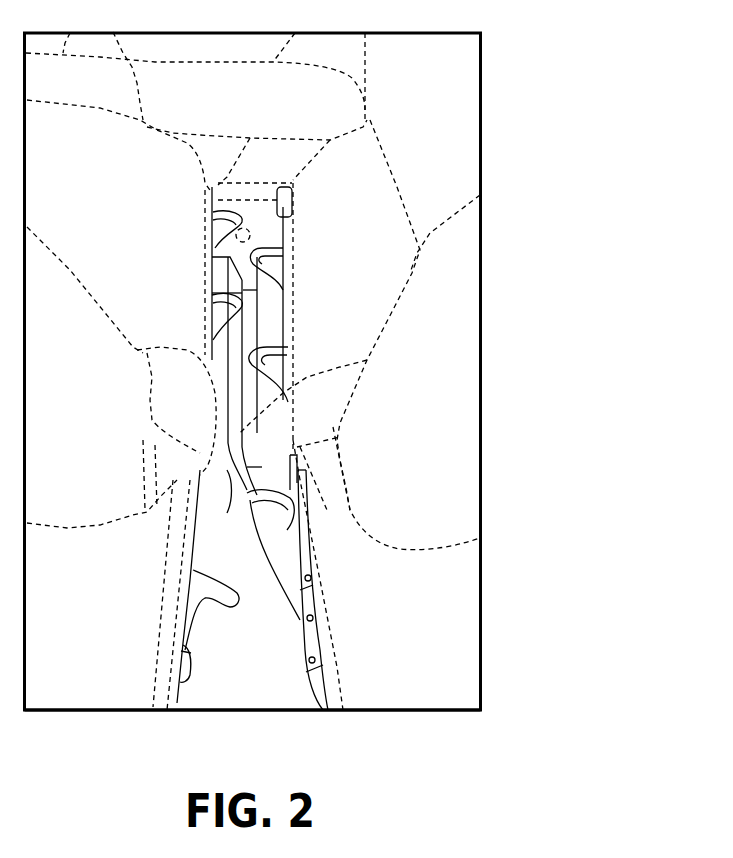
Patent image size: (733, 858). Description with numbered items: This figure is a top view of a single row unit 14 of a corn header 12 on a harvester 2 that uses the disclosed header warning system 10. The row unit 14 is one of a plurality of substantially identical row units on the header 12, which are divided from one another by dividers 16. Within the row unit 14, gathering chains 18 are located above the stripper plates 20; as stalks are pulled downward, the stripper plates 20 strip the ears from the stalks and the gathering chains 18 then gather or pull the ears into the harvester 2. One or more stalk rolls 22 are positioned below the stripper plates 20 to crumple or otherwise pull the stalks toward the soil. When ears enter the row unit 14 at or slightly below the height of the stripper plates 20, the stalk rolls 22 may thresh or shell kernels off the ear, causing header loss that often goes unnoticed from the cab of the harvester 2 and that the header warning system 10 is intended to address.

The harvester 2 is at (568, 96).
The header warning system 10 is at (606, 124).
The header 12 is at (649, 226).
The row unit 14 is at (629, 164).
The divider 16 is at (96, 697).
The gathering chains 18 is at (283, 353).
The stripper plates 20 is at (217, 538).
The stalk rolls 22 is at (247, 467).